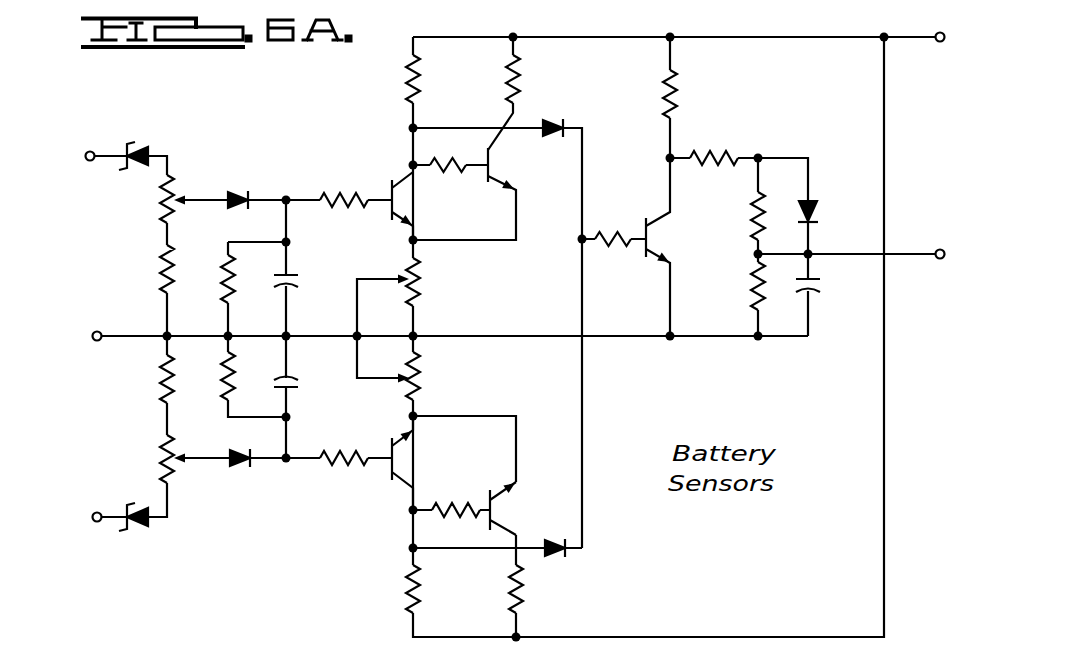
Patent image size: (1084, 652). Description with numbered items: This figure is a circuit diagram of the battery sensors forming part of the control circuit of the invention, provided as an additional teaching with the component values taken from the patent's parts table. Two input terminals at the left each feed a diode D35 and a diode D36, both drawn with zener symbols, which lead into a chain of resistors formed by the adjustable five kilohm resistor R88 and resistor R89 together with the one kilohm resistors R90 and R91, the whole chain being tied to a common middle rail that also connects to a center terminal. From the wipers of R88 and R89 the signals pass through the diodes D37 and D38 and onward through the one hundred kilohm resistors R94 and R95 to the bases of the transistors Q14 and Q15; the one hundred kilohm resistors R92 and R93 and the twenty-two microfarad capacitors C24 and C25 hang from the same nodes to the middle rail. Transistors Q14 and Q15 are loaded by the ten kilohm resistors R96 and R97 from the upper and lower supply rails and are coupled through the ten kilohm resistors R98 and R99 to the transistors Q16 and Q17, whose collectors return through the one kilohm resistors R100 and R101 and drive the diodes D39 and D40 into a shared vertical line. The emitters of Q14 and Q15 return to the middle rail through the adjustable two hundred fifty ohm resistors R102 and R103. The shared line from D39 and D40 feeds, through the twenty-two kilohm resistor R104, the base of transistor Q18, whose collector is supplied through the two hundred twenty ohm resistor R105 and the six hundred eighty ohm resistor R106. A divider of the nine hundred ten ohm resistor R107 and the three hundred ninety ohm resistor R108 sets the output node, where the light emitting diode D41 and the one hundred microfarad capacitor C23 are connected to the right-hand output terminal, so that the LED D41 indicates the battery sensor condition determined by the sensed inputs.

The diode D35 is at (142, 146).
The diode D36 is at (142, 525).
The diode D37 is at (238, 188).
The diode D38 is at (240, 470).
The diode D39 is at (552, 118).
The diode D40 is at (556, 558).
The light emitting diode D41 is at (839, 232).
The resistor R88 is at (161, 204).
The resistor R89 is at (162, 462).
The resistor R90 is at (162, 268).
The resistor R91 is at (162, 372).
The resistor R92 is at (225, 272).
The resistor R93 is at (224, 385).
The resistor R94 is at (342, 192).
The resistor R95 is at (340, 450).
The resistor R96 is at (408, 86).
The resistor R97 is at (408, 588).
The resistor R98 is at (462, 176).
The resistor R99 is at (450, 500).
The resistor R100 is at (518, 90).
The resistor R101 is at (524, 596).
The resistor R102 is at (420, 292).
The resistor R103 is at (420, 378).
The resistor R104 is at (612, 232).
The resistor R105 is at (676, 92).
The resistor R106 is at (722, 150).
The resistor R107 is at (754, 210).
The resistor R108 is at (754, 288).
The capacitor C23 is at (818, 285).
The capacitor C24 is at (300, 384).
The capacitor C25 is at (302, 282).
The transistor Q14 is at (400, 200).
The transistor Q15 is at (404, 452).
The transistor Q16 is at (500, 164).
The transistor Q17 is at (502, 510).
The transistor Q18 is at (652, 254).